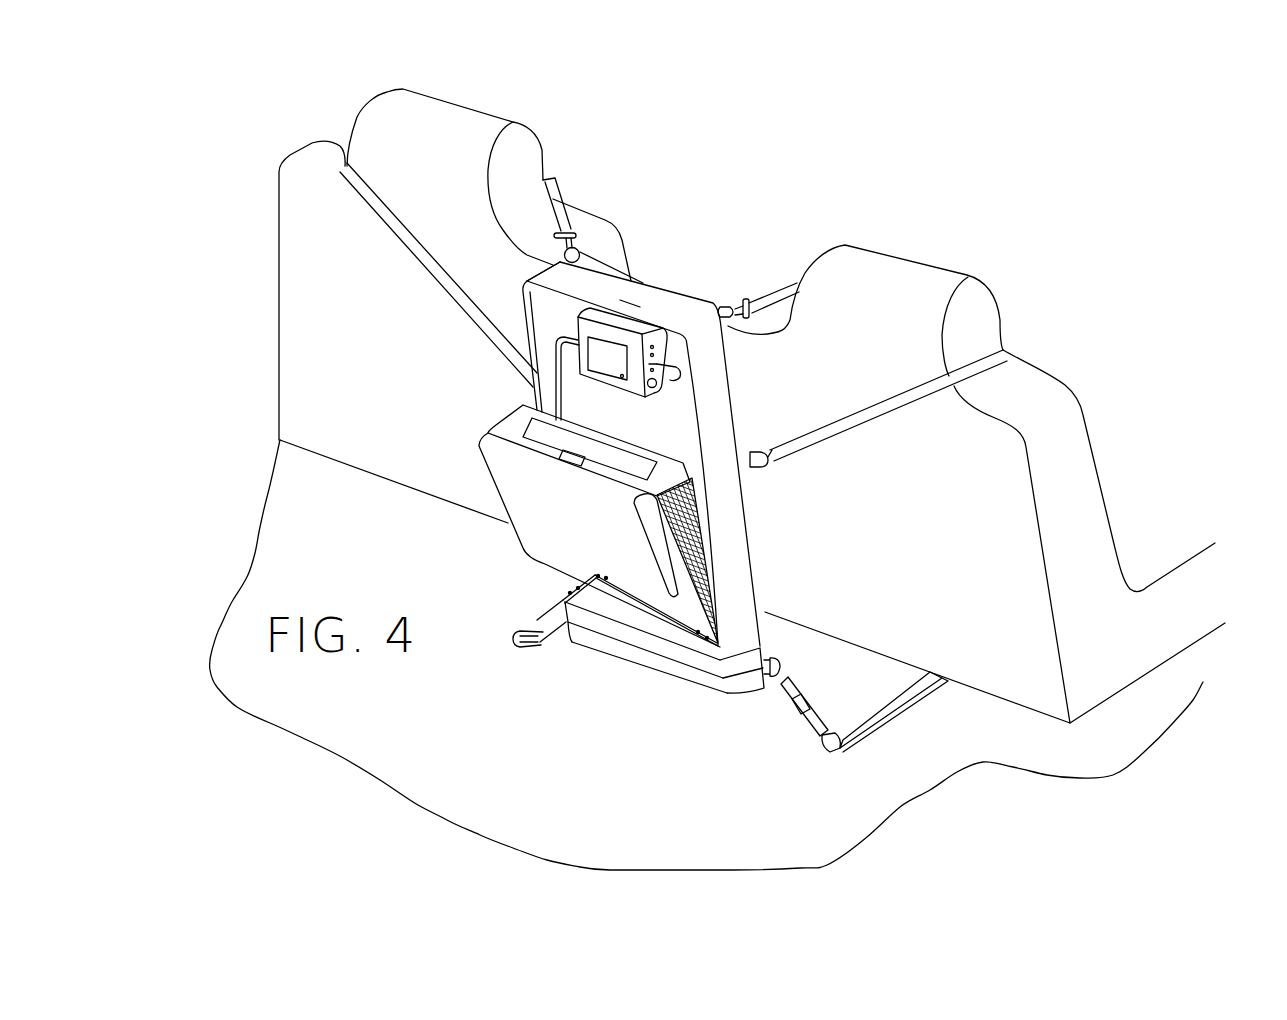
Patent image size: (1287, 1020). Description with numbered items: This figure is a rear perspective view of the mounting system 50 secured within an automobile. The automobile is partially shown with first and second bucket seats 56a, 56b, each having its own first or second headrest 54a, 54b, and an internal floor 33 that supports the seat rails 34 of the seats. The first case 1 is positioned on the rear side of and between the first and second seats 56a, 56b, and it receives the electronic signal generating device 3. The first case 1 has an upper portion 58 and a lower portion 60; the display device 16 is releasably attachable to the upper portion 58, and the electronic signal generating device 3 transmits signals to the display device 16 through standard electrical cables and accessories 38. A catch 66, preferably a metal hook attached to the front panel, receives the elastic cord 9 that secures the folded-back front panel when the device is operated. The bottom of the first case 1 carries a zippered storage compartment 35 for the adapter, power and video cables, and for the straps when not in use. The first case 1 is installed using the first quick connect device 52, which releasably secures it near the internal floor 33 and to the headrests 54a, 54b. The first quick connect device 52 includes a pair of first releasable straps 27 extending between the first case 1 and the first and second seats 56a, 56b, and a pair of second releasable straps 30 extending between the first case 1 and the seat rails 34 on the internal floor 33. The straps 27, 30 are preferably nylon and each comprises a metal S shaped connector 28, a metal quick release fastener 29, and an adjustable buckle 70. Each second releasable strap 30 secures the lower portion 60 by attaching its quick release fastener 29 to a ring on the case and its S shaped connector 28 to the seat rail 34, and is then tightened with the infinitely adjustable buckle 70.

The first case 1 is at (643, 265).
The electronic signal generating device 3 is at (513, 428).
The elastic cord 9 is at (682, 627).
The display device 16 is at (537, 277).
The first releasable strap 27 is at (340, 170).
The S shaped connector 28 is at (773, 463).
The quick release fastener 29 is at (578, 232).
The second releasable strap 30 is at (562, 617).
The internal floor 33 is at (977, 740).
The seat rail 34 is at (843, 747).
The zippered storage compartment 35 is at (622, 652).
The electrical cables and accessories 38 is at (553, 380).
The mounting system 50 is at (728, 175).
The first quick connect device 52 is at (557, 178).
The first headrest 54a is at (900, 258).
The second headrest 54b is at (463, 107).
The first seat 56a is at (983, 520).
The second seat 56b is at (461, 332).
The upper portion 58 is at (652, 417).
The lower portion 60 is at (673, 447).
The catch 66 is at (510, 520).
The adjustable buckle 70 is at (810, 707).